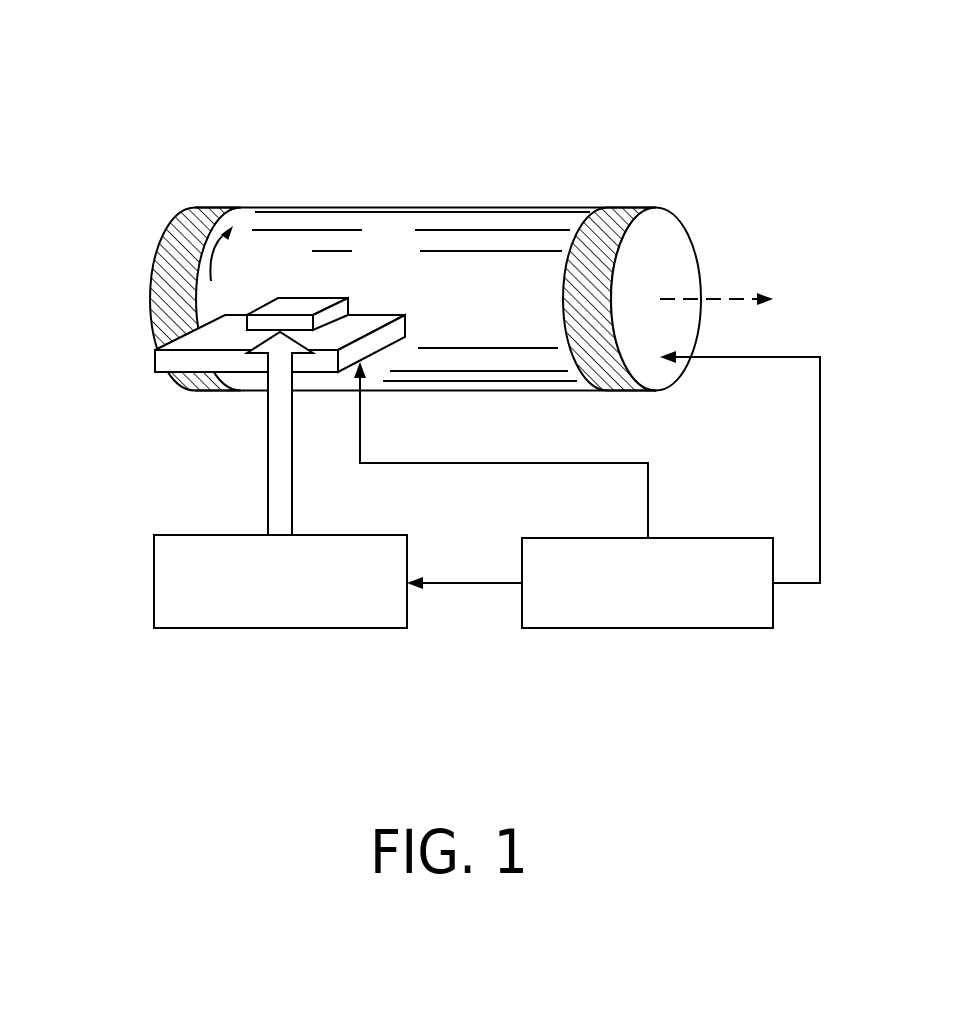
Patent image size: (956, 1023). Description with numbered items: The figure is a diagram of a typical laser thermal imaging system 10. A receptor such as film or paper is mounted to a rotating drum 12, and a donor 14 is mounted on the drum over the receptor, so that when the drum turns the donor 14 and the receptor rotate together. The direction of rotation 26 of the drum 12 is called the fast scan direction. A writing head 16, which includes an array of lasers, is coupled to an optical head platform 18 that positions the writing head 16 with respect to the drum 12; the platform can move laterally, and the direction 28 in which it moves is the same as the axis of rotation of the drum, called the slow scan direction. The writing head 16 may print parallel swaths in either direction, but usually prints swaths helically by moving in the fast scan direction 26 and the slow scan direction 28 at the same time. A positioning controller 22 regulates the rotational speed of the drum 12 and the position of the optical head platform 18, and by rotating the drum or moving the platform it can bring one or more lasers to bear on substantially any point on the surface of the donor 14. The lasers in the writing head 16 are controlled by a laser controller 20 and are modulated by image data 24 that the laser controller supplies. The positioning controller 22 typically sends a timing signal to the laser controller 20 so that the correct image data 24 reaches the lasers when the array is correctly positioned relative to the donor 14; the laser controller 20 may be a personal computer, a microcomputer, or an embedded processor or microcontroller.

The laser thermal imaging system 10 is at (275, 79).
The rotating drum 12 is at (148, 283).
The donor 14 is at (495, 302).
The writing head 16 is at (318, 298).
The optical head platform 18 is at (153, 363).
The laser controller 20 is at (280, 581).
The positioning controller 22 is at (705, 617).
The image data 24 is at (268, 490).
The direction of rotation 26 is at (222, 256).
The direction 28 is at (712, 299).